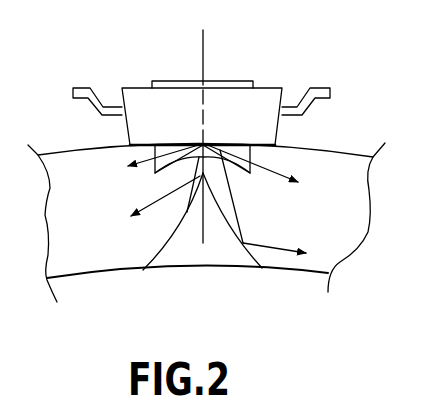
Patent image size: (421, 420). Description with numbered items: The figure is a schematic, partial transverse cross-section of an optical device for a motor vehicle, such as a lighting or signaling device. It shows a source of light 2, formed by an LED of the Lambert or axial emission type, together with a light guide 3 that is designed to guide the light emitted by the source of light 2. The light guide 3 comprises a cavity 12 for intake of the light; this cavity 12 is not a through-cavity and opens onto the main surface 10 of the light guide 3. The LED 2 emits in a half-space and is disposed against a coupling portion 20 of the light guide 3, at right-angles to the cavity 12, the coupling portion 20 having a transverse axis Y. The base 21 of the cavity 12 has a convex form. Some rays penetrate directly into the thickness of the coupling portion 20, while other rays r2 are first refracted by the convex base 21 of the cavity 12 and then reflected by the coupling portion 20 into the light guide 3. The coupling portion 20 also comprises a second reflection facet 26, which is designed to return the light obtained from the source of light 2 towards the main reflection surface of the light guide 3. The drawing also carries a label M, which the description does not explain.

The source of light 2 is at (253, 110).
The light guide 3 is at (72, 253).
The main surface 10 is at (65, 150).
The cavity 12 is at (252, 156).
The coupling portion 20 is at (242, 281).
The base of the cavity 21 is at (172, 163).
The second reflection facet 26 is at (158, 252).
The transverse axis Y is at (202, 57).
The direction of movement M is at (266, 173).
The rays r2 is at (274, 236).